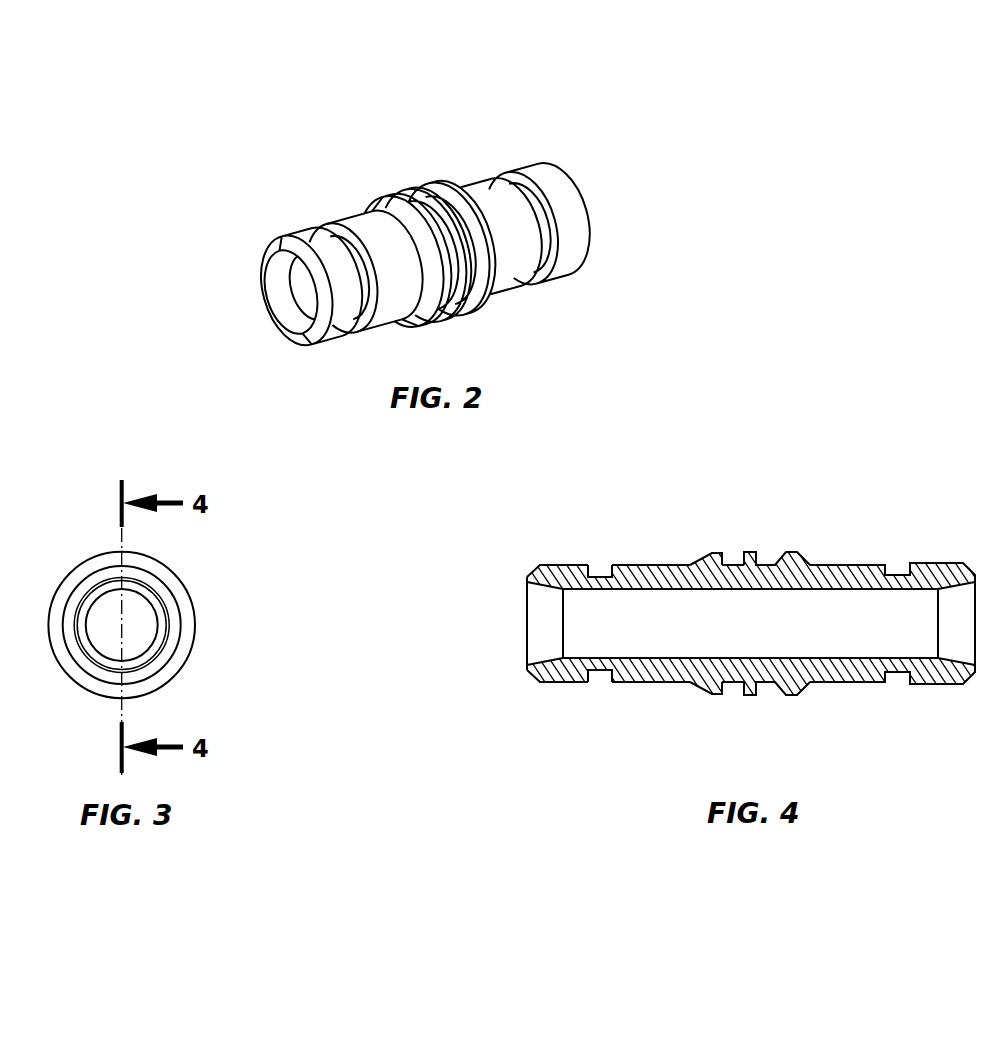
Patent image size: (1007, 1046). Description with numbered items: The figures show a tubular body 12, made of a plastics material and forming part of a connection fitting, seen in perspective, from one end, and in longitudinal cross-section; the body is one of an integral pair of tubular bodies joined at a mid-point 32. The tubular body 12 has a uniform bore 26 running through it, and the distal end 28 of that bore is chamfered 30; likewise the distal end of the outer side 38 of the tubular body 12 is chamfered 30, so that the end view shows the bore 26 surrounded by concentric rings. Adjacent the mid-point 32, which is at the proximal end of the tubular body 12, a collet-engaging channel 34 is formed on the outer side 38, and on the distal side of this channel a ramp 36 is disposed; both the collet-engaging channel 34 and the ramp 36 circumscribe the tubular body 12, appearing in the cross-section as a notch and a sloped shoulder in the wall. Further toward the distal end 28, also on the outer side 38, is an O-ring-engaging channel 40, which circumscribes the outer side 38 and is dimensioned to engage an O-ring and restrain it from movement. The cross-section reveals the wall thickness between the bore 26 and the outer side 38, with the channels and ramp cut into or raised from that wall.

In FIG. 2, the tubular body 12 is at (353, 222).
In FIG. 3, the tubular body 12 is at (195, 640).
In FIG. 3, the bore 26 is at (140, 617).
In FIG. 2, the distal end 28 is at (257, 293).
In FIG. 4, the distal end 28 is at (527, 638).
In FIG. 2, the chamfer 30 is at (311, 348).
In FIG. 3, the chamfer 30 is at (160, 653).
In FIG. 4, the chamfer 30 is at (533, 565).
In FIG. 2, the mid-point 32 is at (430, 193).
In FIG. 4, the mid-point 32 is at (750, 553).
In FIG. 4, the collet-engaging channel 34 is at (730, 562).
In FIG. 3, the ramp 36 is at (162, 577).
In FIG. 4, the ramp 36 is at (707, 555).
In FIG. 4, the outer side 38 is at (640, 682).
In FIG. 2, the O-ring-engaging channel 40 is at (343, 240).
In FIG. 4, the O-ring-engaging channel 40 is at (600, 565).